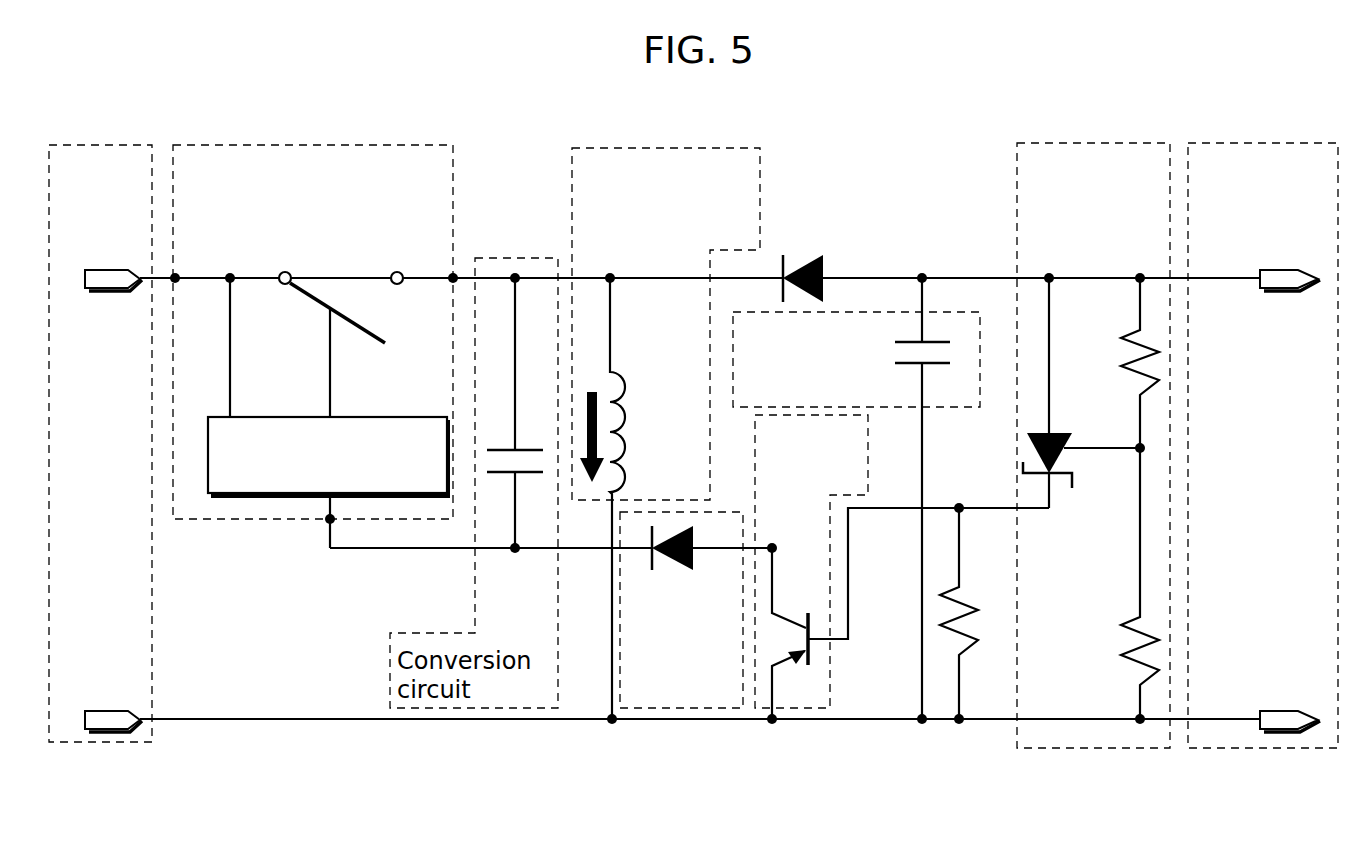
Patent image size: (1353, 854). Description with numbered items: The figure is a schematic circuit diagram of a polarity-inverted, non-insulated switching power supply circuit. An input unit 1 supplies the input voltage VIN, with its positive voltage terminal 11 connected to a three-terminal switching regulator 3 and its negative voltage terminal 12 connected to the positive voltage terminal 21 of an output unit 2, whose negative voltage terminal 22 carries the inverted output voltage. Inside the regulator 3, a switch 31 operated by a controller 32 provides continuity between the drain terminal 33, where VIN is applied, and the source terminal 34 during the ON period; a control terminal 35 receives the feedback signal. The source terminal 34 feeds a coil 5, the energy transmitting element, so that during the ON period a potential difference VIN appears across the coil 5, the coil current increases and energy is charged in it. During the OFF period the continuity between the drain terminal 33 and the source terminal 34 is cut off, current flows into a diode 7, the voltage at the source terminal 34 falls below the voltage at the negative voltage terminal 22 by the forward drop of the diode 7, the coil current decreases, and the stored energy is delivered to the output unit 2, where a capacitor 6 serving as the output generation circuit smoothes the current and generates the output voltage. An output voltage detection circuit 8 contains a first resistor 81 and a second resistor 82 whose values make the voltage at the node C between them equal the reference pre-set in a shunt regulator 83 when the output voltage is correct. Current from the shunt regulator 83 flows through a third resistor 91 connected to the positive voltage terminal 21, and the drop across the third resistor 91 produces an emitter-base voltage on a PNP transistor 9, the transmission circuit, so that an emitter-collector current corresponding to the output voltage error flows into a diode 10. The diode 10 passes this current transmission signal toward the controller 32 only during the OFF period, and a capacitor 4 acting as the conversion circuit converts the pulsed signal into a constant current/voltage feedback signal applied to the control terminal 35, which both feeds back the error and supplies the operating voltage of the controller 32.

The input unit 1 is at (93, 145).
The output unit 2 is at (1258, 143).
The three-terminal switching regulator 3 is at (432, 145).
The capacitor 4 is at (515, 413).
The coil 5 is at (666, 433).
The capacitor 6 is at (856, 498).
The diode 7 is at (803, 263).
The output voltage detection circuit 8 is at (1097, 143).
The PNP transistor 9 is at (902, 567).
The diode 10 is at (681, 610).
The positive voltage terminal 11 is at (111, 299).
The negative voltage terminal 12 is at (109, 690).
The positive voltage terminal 21 is at (1279, 710).
The negative voltage terminal 22 is at (1282, 291).
The switch 31 is at (338, 308).
The controller 32 is at (258, 417).
The drain terminal 33 is at (175, 278).
The source terminal 34 is at (456, 275).
The control terminal 35 is at (328, 522).
The first resistor 81 is at (1118, 583).
The second resistor 82 is at (1118, 363).
The shunt regulator 83 is at (1081, 393).
The third resistor 91 is at (976, 613).